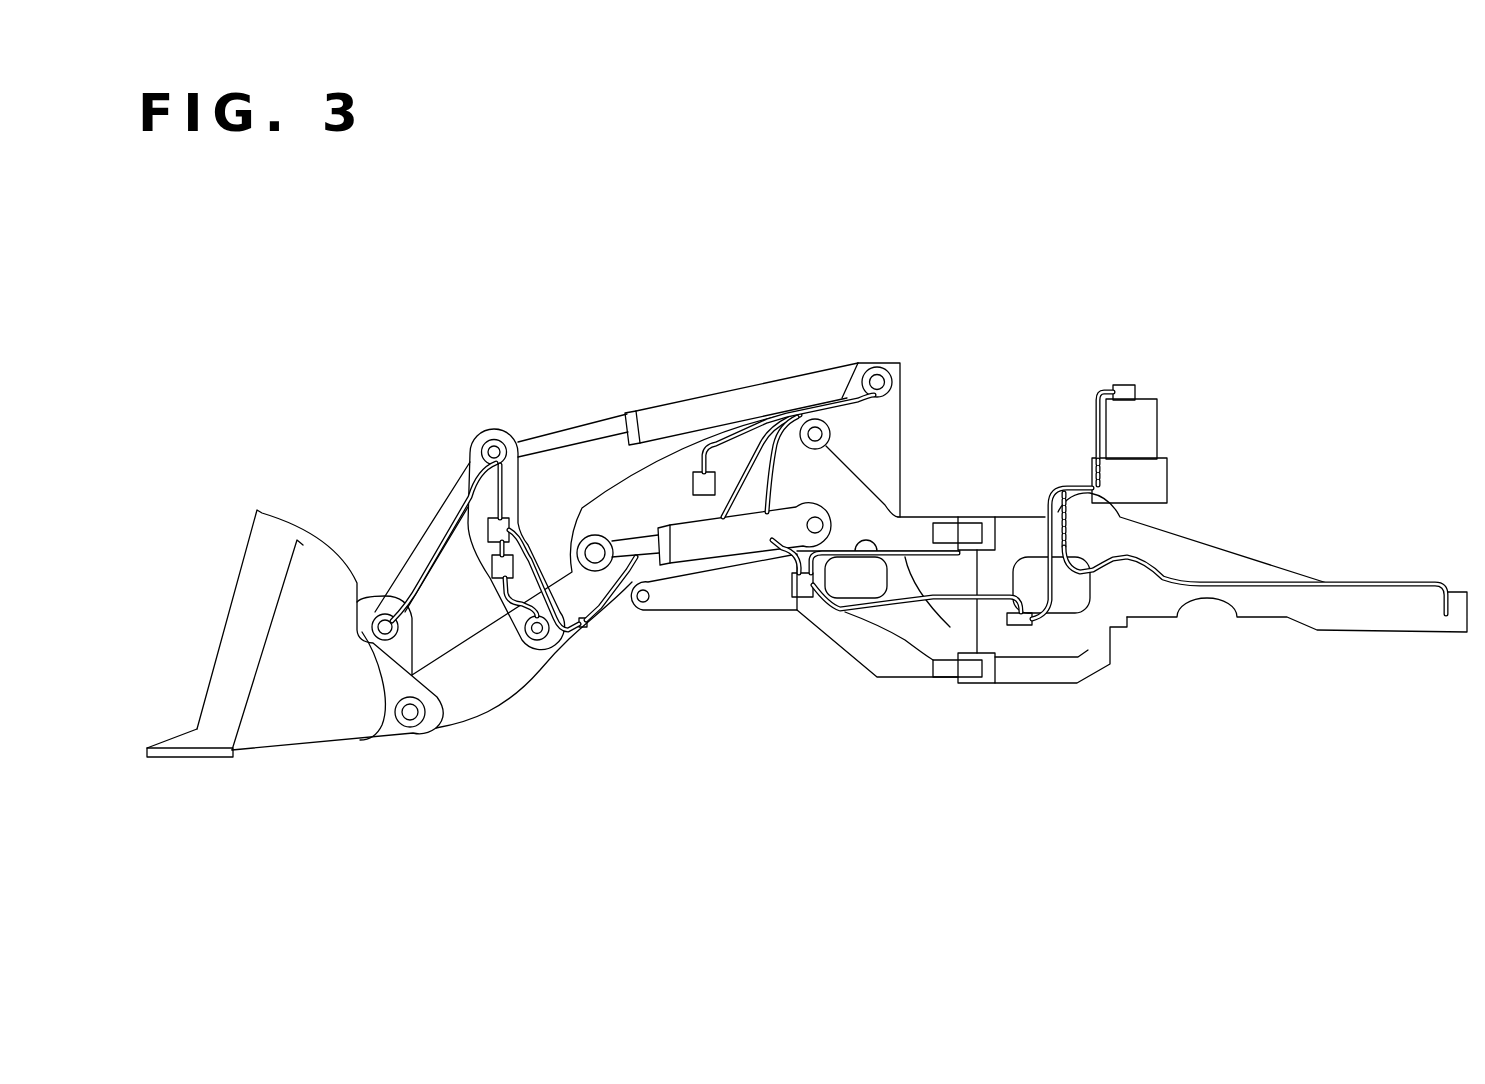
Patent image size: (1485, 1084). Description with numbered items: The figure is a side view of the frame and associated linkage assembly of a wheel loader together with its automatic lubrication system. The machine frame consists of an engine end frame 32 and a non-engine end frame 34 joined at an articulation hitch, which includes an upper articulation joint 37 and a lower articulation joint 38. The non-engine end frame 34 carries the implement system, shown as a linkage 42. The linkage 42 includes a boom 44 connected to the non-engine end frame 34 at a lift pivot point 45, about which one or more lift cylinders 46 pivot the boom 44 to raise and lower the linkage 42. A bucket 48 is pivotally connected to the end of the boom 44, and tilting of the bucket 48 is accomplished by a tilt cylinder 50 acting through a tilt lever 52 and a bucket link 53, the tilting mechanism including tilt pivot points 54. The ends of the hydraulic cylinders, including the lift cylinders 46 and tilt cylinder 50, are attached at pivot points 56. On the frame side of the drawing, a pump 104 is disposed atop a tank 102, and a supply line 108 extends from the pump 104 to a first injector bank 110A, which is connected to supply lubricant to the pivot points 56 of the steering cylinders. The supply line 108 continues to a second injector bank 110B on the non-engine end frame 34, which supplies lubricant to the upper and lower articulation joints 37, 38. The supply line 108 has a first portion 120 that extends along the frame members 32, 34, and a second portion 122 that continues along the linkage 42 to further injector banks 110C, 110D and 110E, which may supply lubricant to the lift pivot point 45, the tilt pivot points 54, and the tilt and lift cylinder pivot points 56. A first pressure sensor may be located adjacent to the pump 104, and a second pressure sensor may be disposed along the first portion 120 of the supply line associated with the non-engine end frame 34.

The engine end frame 32 is at (1368, 600).
The non-engine end frame 34 is at (757, 600).
The upper articulation joint 37 is at (967, 516).
The lower articulation joint 38 is at (970, 684).
The linkage 42 is at (541, 354).
The boom 44 is at (500, 693).
The pivot point 45 is at (816, 419).
The lift cylinder 46 is at (713, 547).
The bucket 48 is at (322, 730).
The tilt cylinder 50 is at (716, 418).
The tilt lever 52 is at (473, 458).
The bucket link 53 is at (437, 537).
The tilt pivot points 54 is at (360, 637).
The pivot points 56 is at (492, 440).
The tank 102 is at (1150, 412).
The pump 104 is at (1120, 385).
The supply line 108 is at (522, 550).
The first injector bank 110A is at (1020, 627).
The second injector bank 110B is at (795, 598).
The injector bank 110C is at (492, 573).
The injector bank 110D is at (447, 555).
The injector bank 110E is at (694, 474).
The first portion 120 is at (945, 662).
The second portion 122 is at (457, 513).